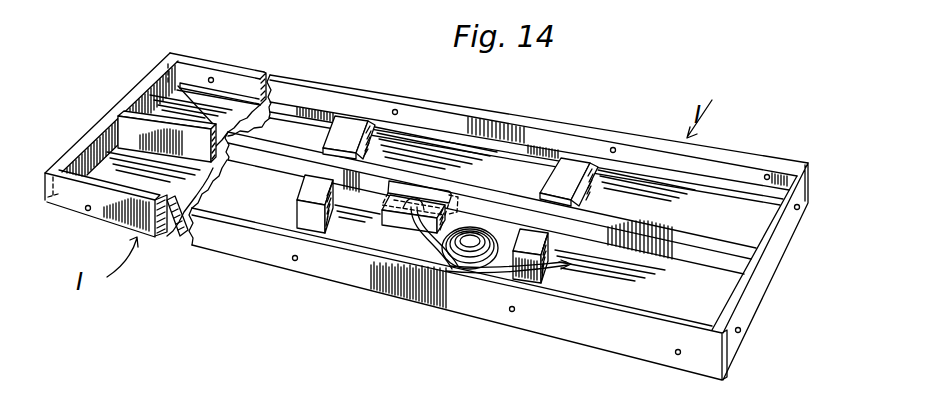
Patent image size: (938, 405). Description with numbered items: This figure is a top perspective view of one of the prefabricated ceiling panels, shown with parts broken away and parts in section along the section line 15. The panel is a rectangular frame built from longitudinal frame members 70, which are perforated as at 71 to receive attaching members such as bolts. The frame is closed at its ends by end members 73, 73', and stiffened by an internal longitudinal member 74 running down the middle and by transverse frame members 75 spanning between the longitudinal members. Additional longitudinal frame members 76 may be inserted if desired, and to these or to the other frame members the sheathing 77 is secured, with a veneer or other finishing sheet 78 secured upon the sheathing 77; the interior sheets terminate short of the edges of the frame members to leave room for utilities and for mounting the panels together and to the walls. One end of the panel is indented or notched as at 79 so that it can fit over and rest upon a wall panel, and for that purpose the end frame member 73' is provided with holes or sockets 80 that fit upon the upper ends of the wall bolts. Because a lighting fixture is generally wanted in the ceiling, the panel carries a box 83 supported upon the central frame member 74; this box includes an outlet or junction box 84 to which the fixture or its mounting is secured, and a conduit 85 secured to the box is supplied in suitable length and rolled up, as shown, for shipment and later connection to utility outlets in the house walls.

The section line 15- 15 is at (416, 62).
The longitudinal frame member 70 is at (200, 61).
The perforation 71 is at (212, 77).
The end member 73 is at (762, 271).
The end frame member 73' is at (107, 109).
The internal longitudinal member 74 is at (690, 233).
The transverse frame member 75 is at (350, 128).
The additional longitudinal frame member 76 is at (231, 92).
The sheathing 77 is at (653, 305).
The finishing sheet 78 is at (181, 225).
The notch 79 is at (48, 205).
The socket 80 is at (167, 62).
The box 83 is at (401, 222).
The junction box 84 is at (430, 197).
The conduit 85 is at (450, 272).